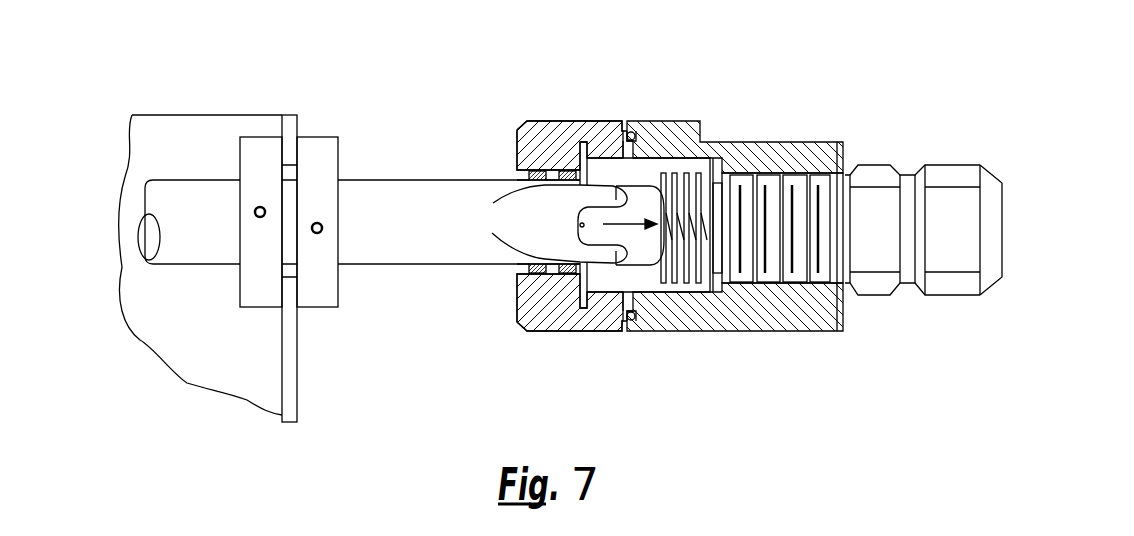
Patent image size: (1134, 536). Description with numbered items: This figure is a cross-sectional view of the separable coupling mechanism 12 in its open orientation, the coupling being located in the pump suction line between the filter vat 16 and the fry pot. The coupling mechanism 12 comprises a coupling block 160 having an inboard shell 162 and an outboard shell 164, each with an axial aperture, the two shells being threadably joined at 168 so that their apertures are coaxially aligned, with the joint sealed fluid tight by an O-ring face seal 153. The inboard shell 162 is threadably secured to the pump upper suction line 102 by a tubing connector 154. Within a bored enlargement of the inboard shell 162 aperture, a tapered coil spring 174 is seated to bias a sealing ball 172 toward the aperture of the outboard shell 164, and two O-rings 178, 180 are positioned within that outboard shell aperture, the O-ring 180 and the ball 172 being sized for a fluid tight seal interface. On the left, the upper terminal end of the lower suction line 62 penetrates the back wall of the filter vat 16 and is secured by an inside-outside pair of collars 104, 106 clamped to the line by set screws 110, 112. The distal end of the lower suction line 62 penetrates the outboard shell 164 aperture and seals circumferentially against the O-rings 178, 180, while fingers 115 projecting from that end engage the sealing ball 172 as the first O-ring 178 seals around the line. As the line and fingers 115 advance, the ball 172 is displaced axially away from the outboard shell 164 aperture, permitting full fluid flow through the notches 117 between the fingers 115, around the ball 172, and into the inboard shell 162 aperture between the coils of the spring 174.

The coupling mechanism 12 is at (737, 203).
The filter vat 16 is at (232, 359).
The lower suction line 62 is at (407, 229).
The pump upper suction line 102 is at (1016, 191).
The inside collar 104 is at (252, 297).
The outside collar 106 is at (322, 300).
The set screw 110 is at (258, 207).
The set screw 112 is at (317, 234).
The fingers 115 is at (592, 201).
The notches 117 is at (579, 224).
The O-ring face seal 153 is at (634, 322).
The tubing connector 154 is at (932, 297).
The coupling block 160 is at (648, 203).
The inboard shell 162 is at (754, 333).
The outboard shell 164 is at (553, 331).
The threaded joint 168 is at (592, 138).
The sealing ball 172 is at (647, 193).
The tapered coil spring 174 is at (707, 165).
The first O-ring 178 is at (531, 172).
The O-ring 180 is at (518, 130).